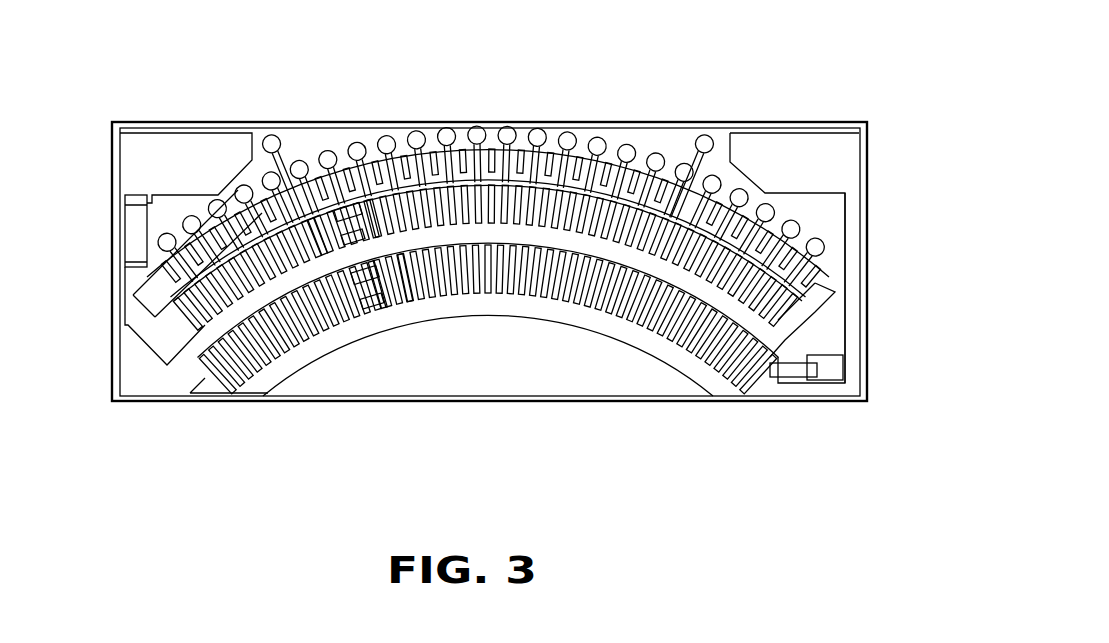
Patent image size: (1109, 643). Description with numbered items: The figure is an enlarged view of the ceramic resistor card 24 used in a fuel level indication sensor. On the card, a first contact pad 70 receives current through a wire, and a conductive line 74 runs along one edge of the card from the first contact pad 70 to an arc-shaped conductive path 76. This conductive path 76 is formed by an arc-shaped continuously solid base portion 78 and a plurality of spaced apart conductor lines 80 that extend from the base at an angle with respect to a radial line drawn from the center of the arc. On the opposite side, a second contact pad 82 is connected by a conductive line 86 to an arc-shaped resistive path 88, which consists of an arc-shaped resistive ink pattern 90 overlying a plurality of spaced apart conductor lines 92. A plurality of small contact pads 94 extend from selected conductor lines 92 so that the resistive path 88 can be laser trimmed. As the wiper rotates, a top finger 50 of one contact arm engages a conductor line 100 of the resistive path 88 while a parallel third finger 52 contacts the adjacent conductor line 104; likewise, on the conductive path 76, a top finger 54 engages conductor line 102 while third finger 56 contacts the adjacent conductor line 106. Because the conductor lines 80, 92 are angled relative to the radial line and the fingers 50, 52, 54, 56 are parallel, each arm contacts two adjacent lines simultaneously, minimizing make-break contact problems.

The resistor card 24 is at (248, 108).
The second contact pad 82 is at (152, 148).
The conductive line 86 is at (140, 237).
The arc-shaped conductive path 76 is at (490, 332).
The first contact pad 70 is at (832, 148).
The conductive line 74 is at (852, 257).
The small contact pads 94 is at (478, 126).
The arc-shaped resistive path 88 is at (514, 144).
The arc-shaped resistive ink pattern 90 is at (578, 228).
The conductor lines 92 is at (208, 310).
The conductor lines 80 is at (250, 305).
The arc-shaped continuously solid base portion 78 is at (527, 318).
The conductor line 100 is at (346, 230).
The top finger 50 is at (338, 210).
The adjacent conductor line 104 is at (307, 178).
The third finger 52 is at (368, 238).
The adjacent conductor line 106 is at (330, 290).
The conductor line 102 is at (372, 300).
The third finger 56 is at (360, 305).
The top finger 54 is at (415, 320).